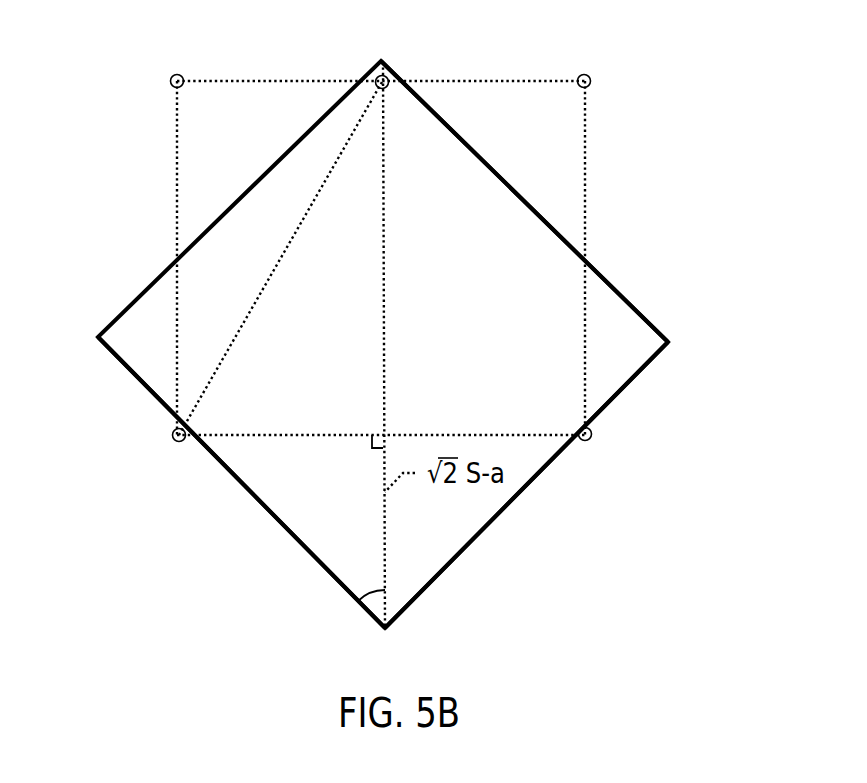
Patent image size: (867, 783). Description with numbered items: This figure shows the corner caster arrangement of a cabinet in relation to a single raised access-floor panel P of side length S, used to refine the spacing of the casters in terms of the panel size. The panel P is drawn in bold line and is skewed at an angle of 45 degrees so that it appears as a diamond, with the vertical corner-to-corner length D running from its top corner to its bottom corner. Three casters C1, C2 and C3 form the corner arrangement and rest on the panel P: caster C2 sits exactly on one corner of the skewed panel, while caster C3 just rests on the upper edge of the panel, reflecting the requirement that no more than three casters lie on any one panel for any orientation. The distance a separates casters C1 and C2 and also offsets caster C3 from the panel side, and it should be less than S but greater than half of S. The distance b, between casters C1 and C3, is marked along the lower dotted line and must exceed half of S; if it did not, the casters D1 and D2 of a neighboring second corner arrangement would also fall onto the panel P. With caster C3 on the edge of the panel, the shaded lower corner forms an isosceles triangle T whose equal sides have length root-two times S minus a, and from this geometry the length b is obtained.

The panel P is at (414, 344).
The side length S is at (551, 344).
The triangle T is at (241, 482).
The corner-to-corner length D is at (335, 366).
The distance between casters C1 and C2 a is at (335, 258).
The distance between casters C1 and C3 b is at (381, 227).
The caster C1 is at (170, 80).
The caster C2 is at (153, 464).
The caster C3 is at (417, 47).
The caster D1 is at (625, 61).
The caster D2 is at (630, 453).
The skew angle 45 is at (314, 616).